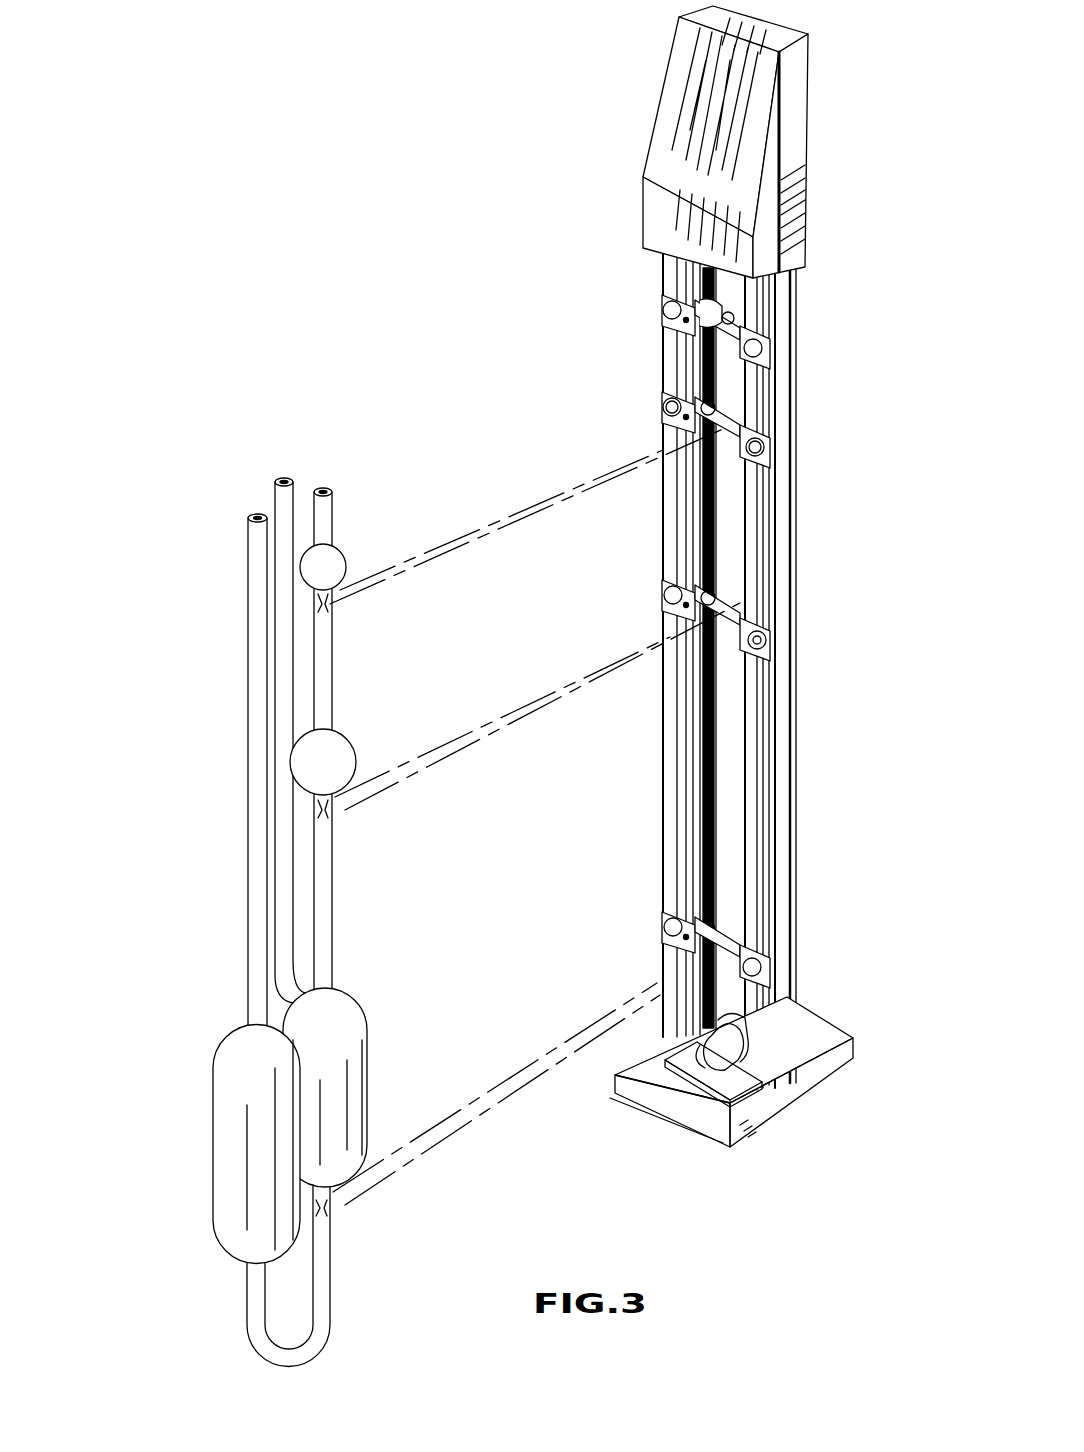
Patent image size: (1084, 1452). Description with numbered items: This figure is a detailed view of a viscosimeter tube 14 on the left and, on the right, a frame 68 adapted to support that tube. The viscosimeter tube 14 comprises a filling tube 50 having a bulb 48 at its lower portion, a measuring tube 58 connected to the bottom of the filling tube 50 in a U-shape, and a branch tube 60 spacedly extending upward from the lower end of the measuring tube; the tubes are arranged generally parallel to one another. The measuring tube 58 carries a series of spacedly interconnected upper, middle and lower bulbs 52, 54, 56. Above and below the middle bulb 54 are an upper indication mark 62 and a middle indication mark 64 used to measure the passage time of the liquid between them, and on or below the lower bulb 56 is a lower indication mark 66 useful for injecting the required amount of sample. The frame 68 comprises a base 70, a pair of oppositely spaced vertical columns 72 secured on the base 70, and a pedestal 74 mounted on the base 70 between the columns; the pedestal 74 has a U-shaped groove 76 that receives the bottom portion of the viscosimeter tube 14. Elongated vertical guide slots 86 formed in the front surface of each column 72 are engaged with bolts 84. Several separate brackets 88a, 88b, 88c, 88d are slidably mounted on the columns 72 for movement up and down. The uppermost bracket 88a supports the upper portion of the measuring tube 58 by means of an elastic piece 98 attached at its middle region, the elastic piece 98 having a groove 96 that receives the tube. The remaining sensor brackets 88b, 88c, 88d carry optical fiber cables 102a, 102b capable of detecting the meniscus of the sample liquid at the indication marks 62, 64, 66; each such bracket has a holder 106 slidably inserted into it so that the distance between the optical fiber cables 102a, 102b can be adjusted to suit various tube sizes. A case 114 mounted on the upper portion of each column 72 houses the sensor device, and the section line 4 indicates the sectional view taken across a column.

The viscosimeter tube 14 is at (243, 1265).
The bulb 48 is at (230, 1122).
The filling tube 50 is at (260, 550).
The upper bulb 52 is at (335, 567).
The middle bulb 54 is at (340, 760).
The lower bulb 56 is at (362, 1040).
The measuring tube 58 is at (323, 530).
The branch tube 60 is at (284, 507).
The upper indication mark 62 is at (322, 604).
The middle indication mark 64 is at (322, 810).
The lower indication mark 66 is at (320, 1208).
The frame 68 is at (722, 671).
The base 70 is at (690, 1118).
The vertical column 72 is at (665, 725).
The pedestal 74 is at (750, 1090).
The U-shaped groove 76 is at (615, 1093).
The bolt 84 is at (662, 415).
The vertical guide slot 86 is at (680, 685).
The bracket 88a is at (660, 300).
The sensor bracket 88b is at (663, 402).
The sensor bracket 88c is at (663, 598).
The sensor bracket 88d is at (663, 915).
The groove 96 is at (690, 357).
The elastic piece 98 is at (737, 317).
The optical fiber cable 102a is at (700, 606).
The optical fiber cable 102b is at (772, 633).
The holder 106 is at (700, 413).
The case 114 is at (800, 205).
The section line 4- 4 is at (644, 355).